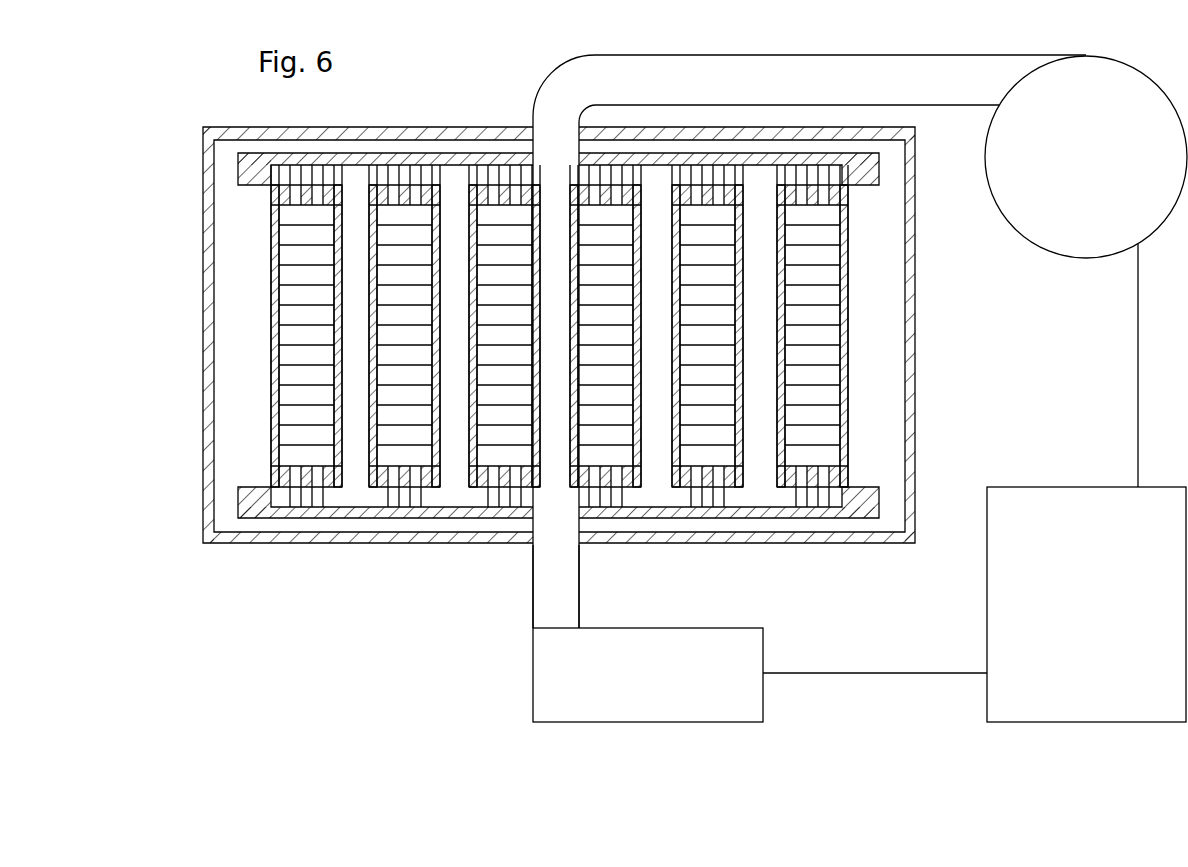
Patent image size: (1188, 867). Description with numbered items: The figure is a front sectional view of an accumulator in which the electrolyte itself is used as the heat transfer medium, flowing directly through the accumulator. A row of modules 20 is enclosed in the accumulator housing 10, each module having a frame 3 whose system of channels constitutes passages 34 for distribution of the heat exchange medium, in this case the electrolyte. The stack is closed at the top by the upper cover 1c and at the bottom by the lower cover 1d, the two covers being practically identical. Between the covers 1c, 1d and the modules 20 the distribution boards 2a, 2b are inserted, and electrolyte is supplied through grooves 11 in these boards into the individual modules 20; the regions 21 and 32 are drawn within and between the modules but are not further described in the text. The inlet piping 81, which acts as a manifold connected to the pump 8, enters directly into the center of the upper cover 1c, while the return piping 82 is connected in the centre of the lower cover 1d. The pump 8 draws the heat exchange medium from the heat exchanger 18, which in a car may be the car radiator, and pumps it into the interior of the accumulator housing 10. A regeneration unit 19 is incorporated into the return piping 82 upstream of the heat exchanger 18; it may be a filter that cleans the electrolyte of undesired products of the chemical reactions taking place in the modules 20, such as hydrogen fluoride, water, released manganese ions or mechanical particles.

The upper cover 1c is at (873, 155).
The lower cover 1d is at (873, 497).
The distribution board 2a is at (850, 197).
The distribution board 2b is at (850, 484).
The frame 3 is at (878, 332).
The pump 8 is at (1086, 271).
The accumulator housing 10 is at (892, 545).
The grooves 11 is at (837, 175).
The heat exchanger 18 is at (974, 604).
The regeneration unit 19 is at (648, 675).
The module 20 is at (850, 372).
The insulating spacer 21 is at (815, 200).
The flow passage 32 is at (750, 458).
The passage 34 is at (353, 288).
The inlet piping 81 is at (538, 102).
The return piping 82 is at (579, 587).